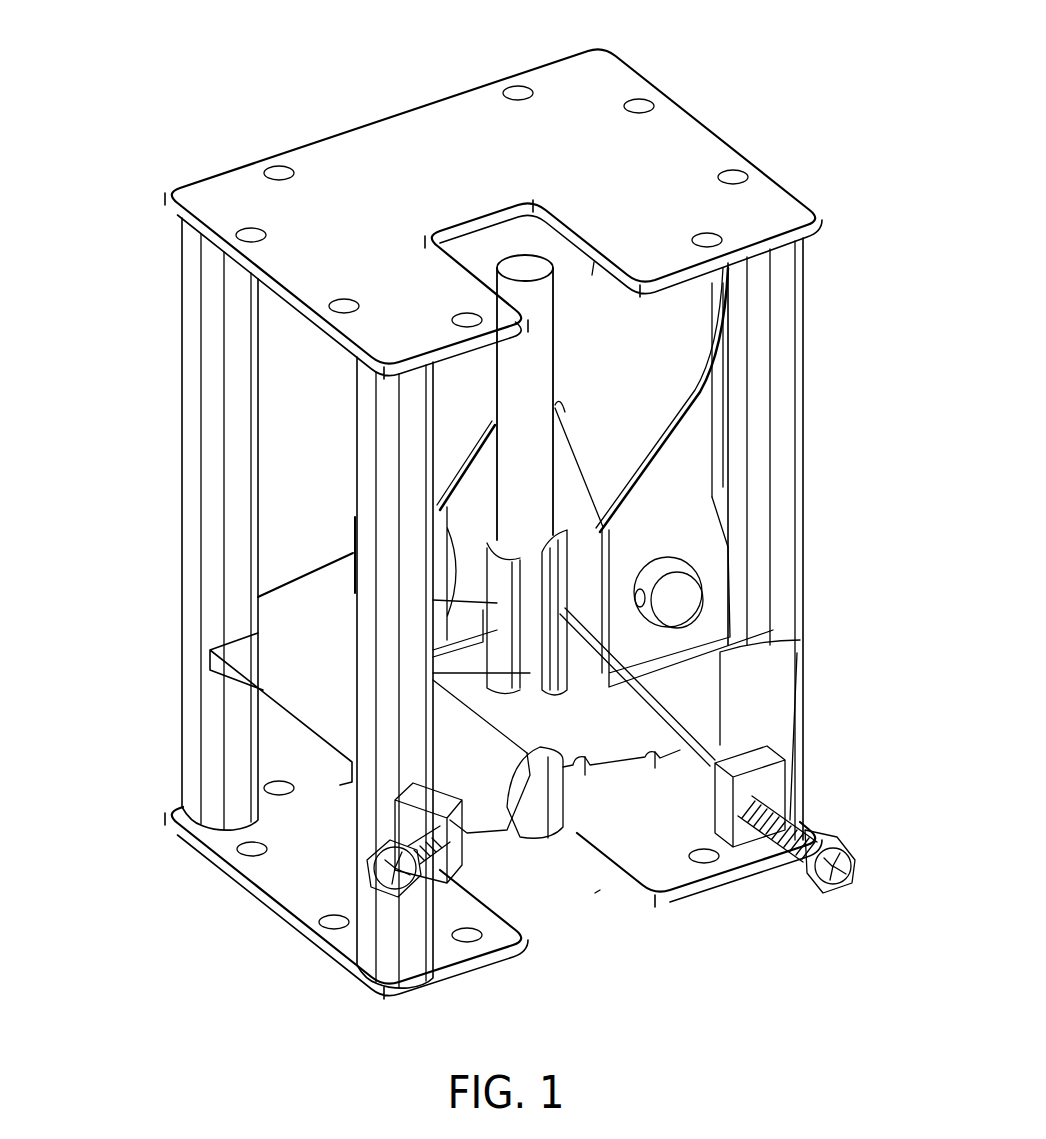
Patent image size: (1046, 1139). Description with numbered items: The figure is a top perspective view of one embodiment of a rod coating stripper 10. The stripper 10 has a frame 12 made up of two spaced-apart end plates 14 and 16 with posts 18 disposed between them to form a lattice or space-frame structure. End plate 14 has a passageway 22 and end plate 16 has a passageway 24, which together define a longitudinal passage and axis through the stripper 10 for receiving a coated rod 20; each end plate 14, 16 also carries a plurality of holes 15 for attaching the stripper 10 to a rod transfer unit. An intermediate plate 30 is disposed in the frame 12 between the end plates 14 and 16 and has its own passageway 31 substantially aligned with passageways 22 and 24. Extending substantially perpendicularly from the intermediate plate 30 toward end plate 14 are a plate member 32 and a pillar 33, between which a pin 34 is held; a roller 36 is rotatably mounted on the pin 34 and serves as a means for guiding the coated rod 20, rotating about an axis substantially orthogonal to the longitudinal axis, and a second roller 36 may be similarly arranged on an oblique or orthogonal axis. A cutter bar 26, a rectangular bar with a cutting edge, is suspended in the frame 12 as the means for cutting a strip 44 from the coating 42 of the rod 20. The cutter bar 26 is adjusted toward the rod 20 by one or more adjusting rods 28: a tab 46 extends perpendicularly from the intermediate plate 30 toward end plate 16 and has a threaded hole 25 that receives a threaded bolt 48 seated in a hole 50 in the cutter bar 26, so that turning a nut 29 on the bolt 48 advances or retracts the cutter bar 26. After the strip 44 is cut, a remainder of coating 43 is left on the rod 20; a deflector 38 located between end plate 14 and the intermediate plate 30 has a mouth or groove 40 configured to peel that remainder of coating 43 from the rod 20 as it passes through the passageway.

The rod coating stripper 10 is at (187, 37).
The frame 12 is at (187, 165).
The end plate 14 is at (617, 70).
The holes 15 is at (279, 172).
The end plate 16 is at (680, 877).
The posts 18 is at (785, 546).
The rod 20 is at (525, 268).
The passageway 22 is at (592, 275).
The passageway 24 is at (595, 893).
The threaded hole 25 is at (760, 800).
The cutter bar 26 is at (590, 713).
The adjusting rod 28 is at (564, 900).
The nut 29 is at (855, 877).
The intermediate plate 30 is at (743, 728).
The passageway 31 is at (530, 712).
The plate member 32 is at (352, 553).
The pillar 33 is at (560, 477).
The pin 34 is at (683, 593).
The roller 36 is at (460, 530).
The deflector 38 is at (683, 353).
The groove 40 is at (565, 440).
The coating 42 is at (533, 833).
The remainder of coating 43 is at (497, 600).
The coating strip 44 is at (525, 673).
The tab 46 is at (767, 780).
The threaded bolt 48 is at (537, 773).
The hole 50 is at (573, 760).